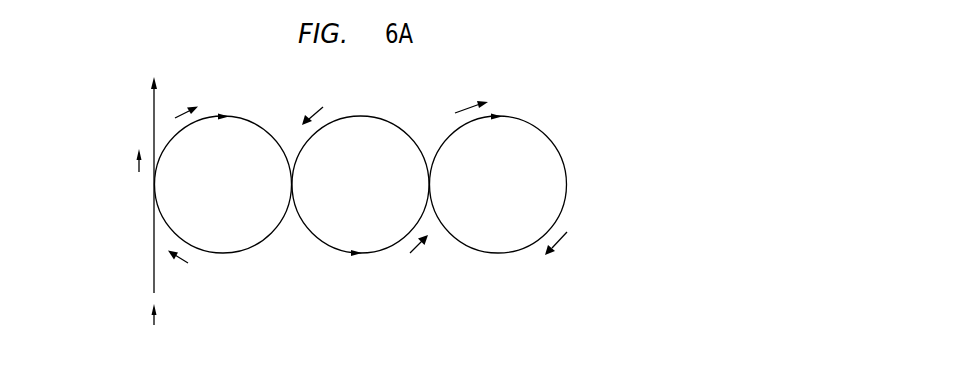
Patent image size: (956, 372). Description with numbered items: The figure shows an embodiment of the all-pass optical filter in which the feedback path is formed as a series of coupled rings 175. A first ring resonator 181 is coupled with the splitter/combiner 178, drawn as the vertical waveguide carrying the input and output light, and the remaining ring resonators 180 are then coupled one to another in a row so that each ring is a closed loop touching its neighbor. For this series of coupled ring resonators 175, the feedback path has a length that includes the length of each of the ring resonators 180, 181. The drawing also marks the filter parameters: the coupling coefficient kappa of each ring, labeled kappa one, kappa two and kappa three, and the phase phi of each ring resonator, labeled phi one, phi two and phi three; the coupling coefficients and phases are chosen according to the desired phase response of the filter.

The series of coupled rings 175 is at (388, 351).
The splitter/combiner 178 is at (131, 152).
The ring resonators 180 is at (380, 252).
The first ring resonator 181 is at (240, 252).